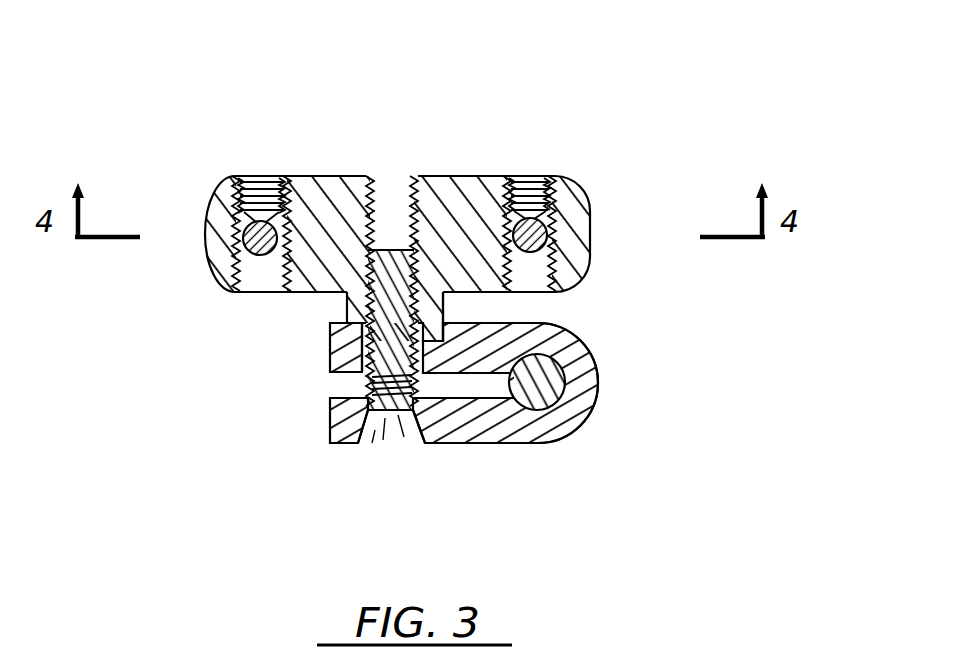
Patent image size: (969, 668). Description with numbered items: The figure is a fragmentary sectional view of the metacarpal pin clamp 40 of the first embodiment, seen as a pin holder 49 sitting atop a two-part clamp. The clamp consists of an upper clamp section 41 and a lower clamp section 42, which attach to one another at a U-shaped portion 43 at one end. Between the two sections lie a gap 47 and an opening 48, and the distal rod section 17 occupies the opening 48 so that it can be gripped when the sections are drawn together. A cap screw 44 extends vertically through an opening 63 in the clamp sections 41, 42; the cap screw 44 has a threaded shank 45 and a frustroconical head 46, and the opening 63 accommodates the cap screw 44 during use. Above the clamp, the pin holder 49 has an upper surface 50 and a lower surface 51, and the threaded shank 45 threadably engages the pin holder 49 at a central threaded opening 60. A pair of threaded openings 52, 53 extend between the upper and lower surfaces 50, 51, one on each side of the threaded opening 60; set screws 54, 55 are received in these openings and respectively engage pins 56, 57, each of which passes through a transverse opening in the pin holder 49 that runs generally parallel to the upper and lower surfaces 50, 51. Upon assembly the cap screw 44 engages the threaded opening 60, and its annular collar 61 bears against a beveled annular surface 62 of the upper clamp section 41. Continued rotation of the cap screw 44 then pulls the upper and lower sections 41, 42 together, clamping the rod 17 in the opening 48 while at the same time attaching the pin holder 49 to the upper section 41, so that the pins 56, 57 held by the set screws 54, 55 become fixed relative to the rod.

The metacarpal pin clamp 40 is at (383, 118).
The upper surface 50 is at (310, 170).
The pin holder 49 is at (588, 195).
The lower surface 51 is at (288, 299).
The threaded opening 52 is at (258, 278).
The set screw 54 is at (263, 174).
The pin 56 is at (244, 226).
The threaded opening 53 is at (534, 292).
The set screw 55 is at (527, 174).
The pin 57 is at (548, 238).
The threaded opening 60 is at (390, 195).
The beveled annular surface 62 is at (372, 312).
The annular collar 61 is at (445, 303).
The frustroconical head 46 is at (413, 440).
The upper clamp section 41 is at (548, 323).
The threaded shank 45 is at (328, 327).
The lower clamp section 42 is at (495, 435).
The U-shaped portion 43 is at (588, 358).
The opening 48 is at (560, 412).
The distal rod section 17 is at (552, 382).
The cap screw 44 is at (392, 423).
The gap 47 is at (330, 384).
The opening 63 is at (357, 412).